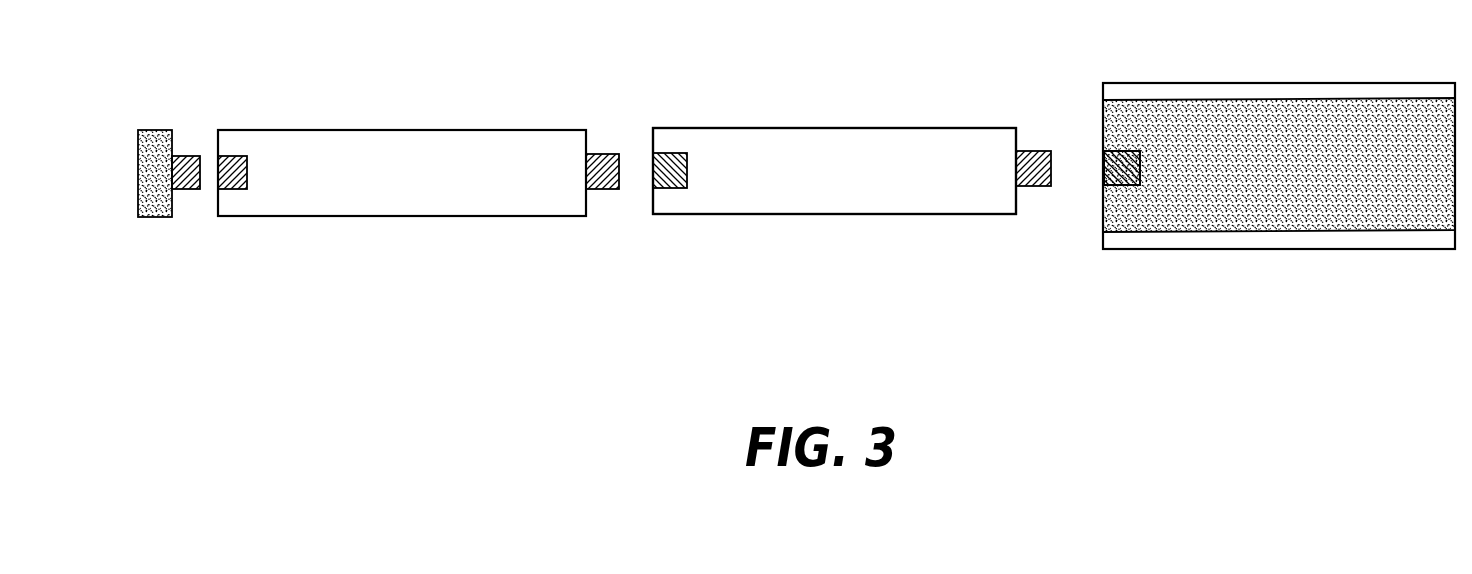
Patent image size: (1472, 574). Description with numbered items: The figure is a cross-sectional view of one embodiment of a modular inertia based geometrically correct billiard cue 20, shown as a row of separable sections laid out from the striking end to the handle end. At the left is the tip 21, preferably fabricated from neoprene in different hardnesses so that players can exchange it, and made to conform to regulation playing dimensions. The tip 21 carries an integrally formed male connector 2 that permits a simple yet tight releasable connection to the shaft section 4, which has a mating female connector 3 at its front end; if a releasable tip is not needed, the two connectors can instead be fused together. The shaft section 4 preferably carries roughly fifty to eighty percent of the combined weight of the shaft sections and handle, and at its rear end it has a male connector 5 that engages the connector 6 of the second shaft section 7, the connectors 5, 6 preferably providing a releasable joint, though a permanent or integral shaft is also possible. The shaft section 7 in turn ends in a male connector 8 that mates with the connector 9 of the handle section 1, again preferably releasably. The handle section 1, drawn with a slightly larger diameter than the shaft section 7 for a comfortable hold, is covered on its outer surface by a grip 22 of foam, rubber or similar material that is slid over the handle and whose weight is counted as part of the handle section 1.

The handle section 1 is at (1298, 110).
The male connector 2 is at (186, 172).
The female connector 3 is at (232, 172).
The shaft section 4 is at (402, 173).
The male connector 5 is at (602, 171).
The connector 6 is at (670, 170).
The shaft section 7 is at (834, 171).
The male connector 8 is at (1033, 168).
The connector 9 is at (1122, 168).
The cue 20 is at (852, 218).
The tip 21 is at (153, 131).
The grip 22 is at (1279, 178).